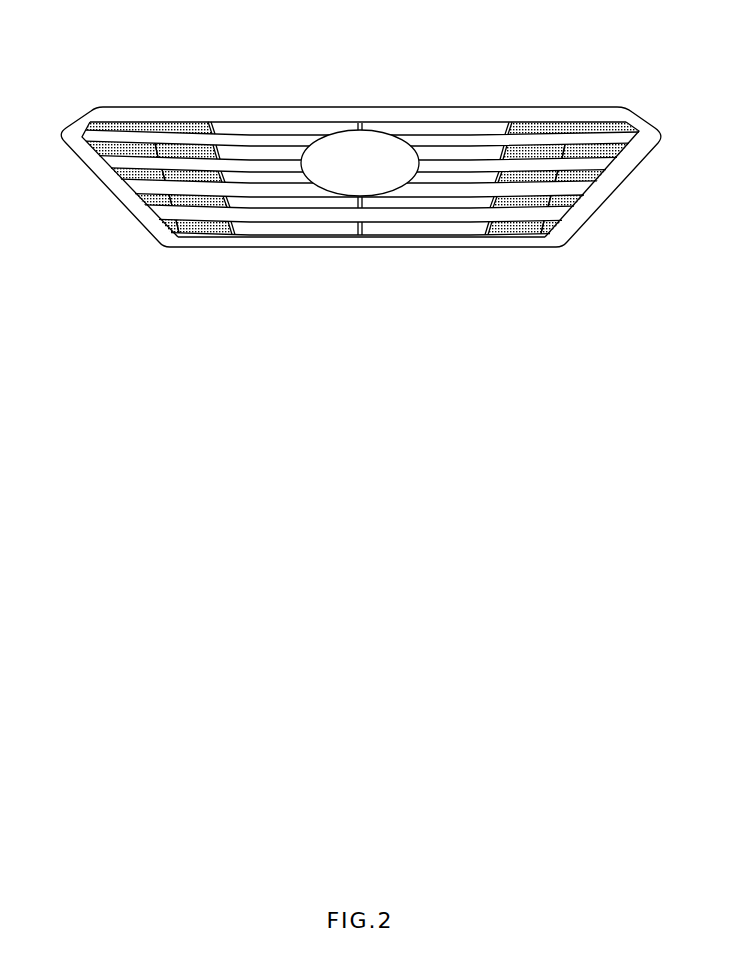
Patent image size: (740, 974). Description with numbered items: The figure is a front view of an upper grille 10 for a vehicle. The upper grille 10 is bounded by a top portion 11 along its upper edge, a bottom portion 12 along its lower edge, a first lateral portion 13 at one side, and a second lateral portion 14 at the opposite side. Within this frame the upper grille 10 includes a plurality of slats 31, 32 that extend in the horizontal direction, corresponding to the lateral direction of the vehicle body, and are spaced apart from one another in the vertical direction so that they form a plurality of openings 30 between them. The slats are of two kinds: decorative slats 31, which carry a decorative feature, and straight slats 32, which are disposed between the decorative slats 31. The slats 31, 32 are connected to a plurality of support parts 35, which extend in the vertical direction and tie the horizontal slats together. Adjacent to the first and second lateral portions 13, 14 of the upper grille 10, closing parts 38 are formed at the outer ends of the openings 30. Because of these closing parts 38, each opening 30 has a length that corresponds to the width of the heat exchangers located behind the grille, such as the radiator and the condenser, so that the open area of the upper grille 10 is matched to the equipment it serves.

The upper grille 10 is at (89, 49).
The top portion 11 is at (394, 113).
The bottom portion 12 is at (327, 243).
The first lateral portion 13 is at (88, 158).
The second lateral portion 14 is at (632, 157).
The openings 30 is at (257, 152).
The decorative slats 31 is at (543, 165).
The straight slats 32 is at (360, 188).
The support parts 35 is at (234, 203).
The closing parts 38 is at (183, 130).